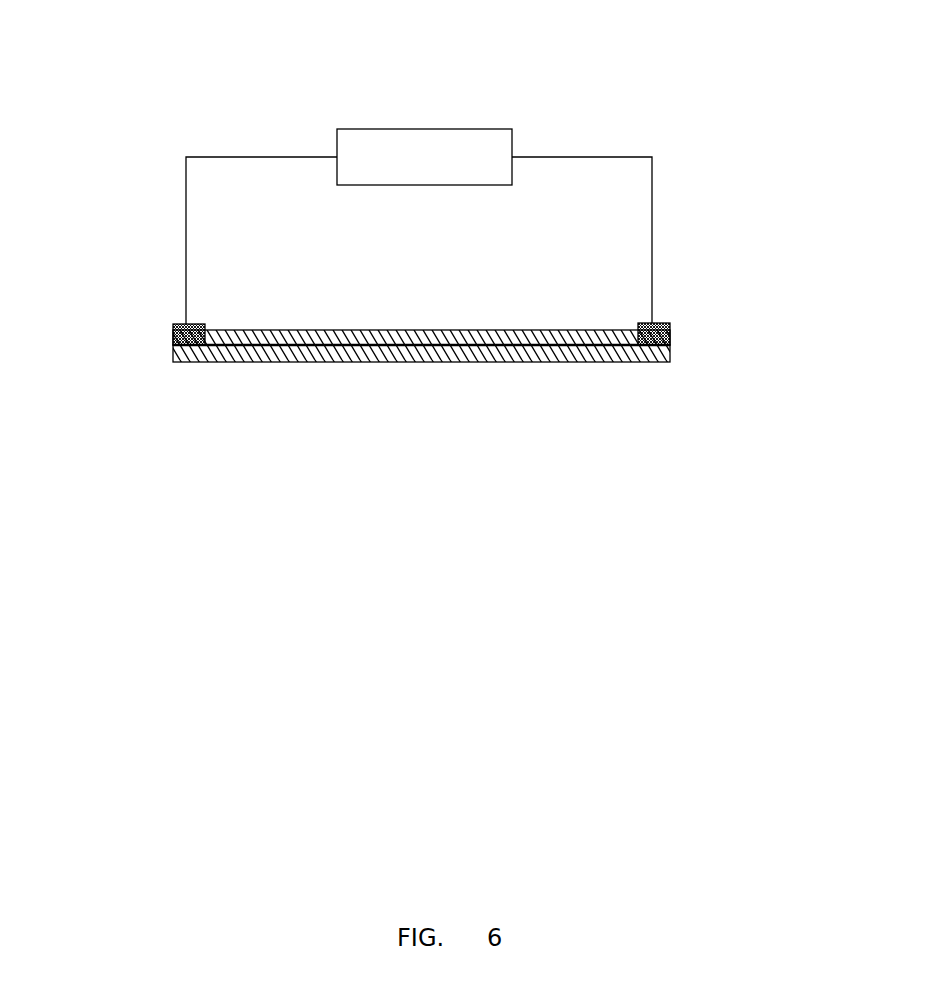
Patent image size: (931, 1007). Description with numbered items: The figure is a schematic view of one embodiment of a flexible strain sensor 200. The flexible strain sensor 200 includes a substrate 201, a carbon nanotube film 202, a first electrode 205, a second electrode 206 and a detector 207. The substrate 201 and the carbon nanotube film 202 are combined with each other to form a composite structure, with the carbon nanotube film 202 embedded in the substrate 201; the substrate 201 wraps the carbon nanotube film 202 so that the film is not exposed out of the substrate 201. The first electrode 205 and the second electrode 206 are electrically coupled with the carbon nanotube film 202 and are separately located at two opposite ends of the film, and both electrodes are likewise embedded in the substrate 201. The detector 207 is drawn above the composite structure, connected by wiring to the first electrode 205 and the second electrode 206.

The flexible strain sensor 200 is at (411, 65).
The substrate 201 is at (485, 362).
The carbon nanotube film 202 is at (430, 329).
The first electrode 205 is at (176, 323).
The second electrode 206 is at (668, 323).
The detector 207 is at (424, 157).